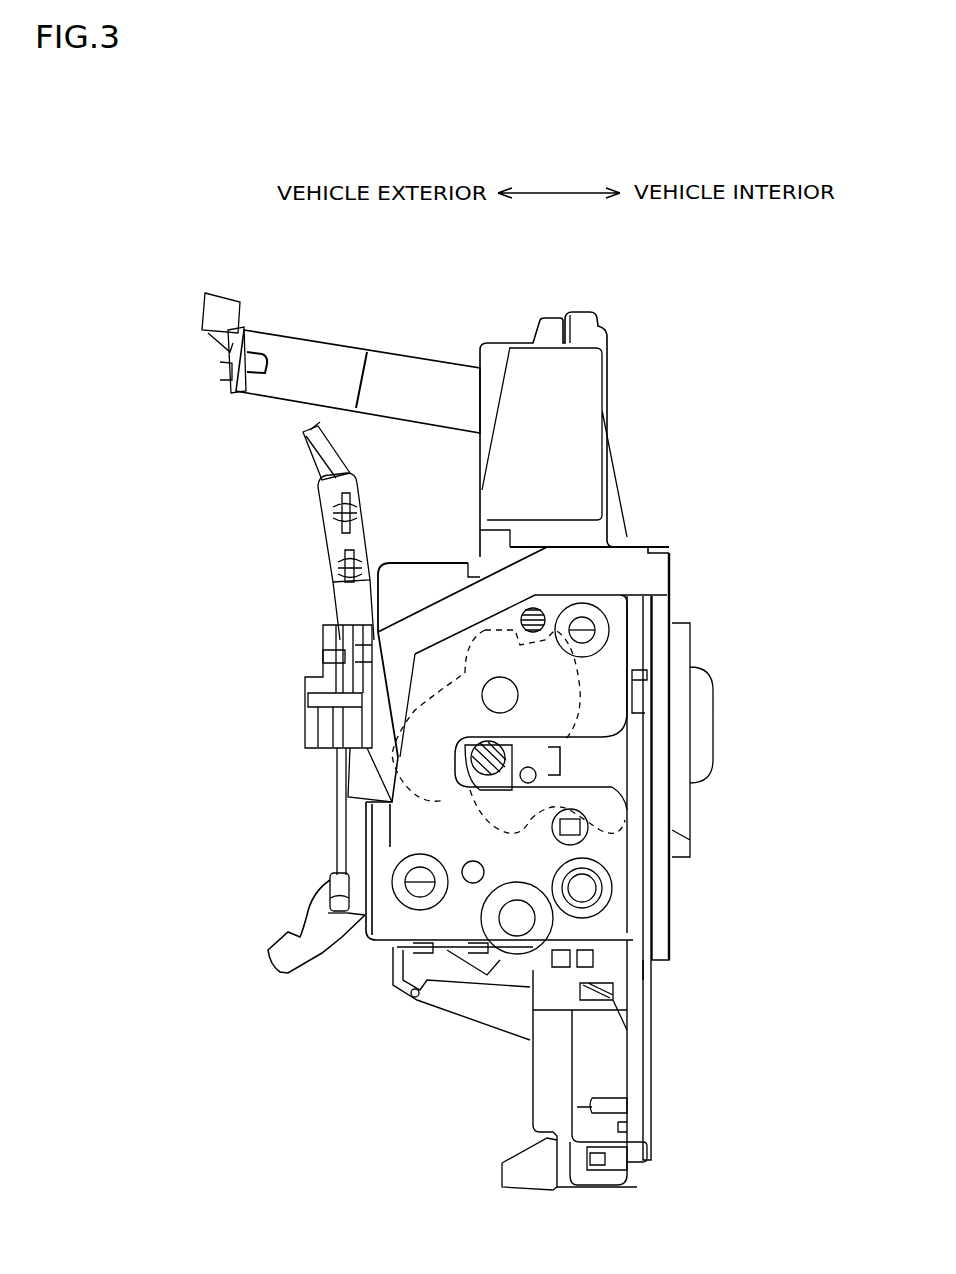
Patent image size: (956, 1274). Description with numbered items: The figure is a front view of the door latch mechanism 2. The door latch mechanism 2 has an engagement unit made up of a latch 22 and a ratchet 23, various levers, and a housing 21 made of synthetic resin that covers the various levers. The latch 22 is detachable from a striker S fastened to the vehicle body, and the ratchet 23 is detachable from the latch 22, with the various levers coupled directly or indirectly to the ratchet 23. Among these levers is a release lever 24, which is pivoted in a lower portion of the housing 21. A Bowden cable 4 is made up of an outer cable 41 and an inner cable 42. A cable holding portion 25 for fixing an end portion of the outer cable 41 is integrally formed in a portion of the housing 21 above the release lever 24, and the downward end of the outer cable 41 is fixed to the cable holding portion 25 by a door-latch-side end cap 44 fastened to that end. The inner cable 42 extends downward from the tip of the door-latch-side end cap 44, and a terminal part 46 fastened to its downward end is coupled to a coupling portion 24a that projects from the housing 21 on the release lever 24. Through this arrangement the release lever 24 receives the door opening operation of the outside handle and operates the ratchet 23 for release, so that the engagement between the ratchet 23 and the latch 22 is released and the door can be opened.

The door latch mechanism 2 is at (698, 594).
The Bowden cable 4 is at (297, 453).
The housing 21 is at (406, 546).
The latch 22 is at (482, 630).
The ratchet 23 is at (540, 800).
The release lever 24 is at (272, 955).
The coupling portion 24a is at (336, 913).
The cable holding portion 25 is at (292, 678).
The outer cable 41 is at (320, 465).
The inner cable 42 is at (338, 832).
The door-latch-side end cap 44 is at (313, 538).
The terminal part 46 is at (330, 891).
The striker S is at (465, 748).